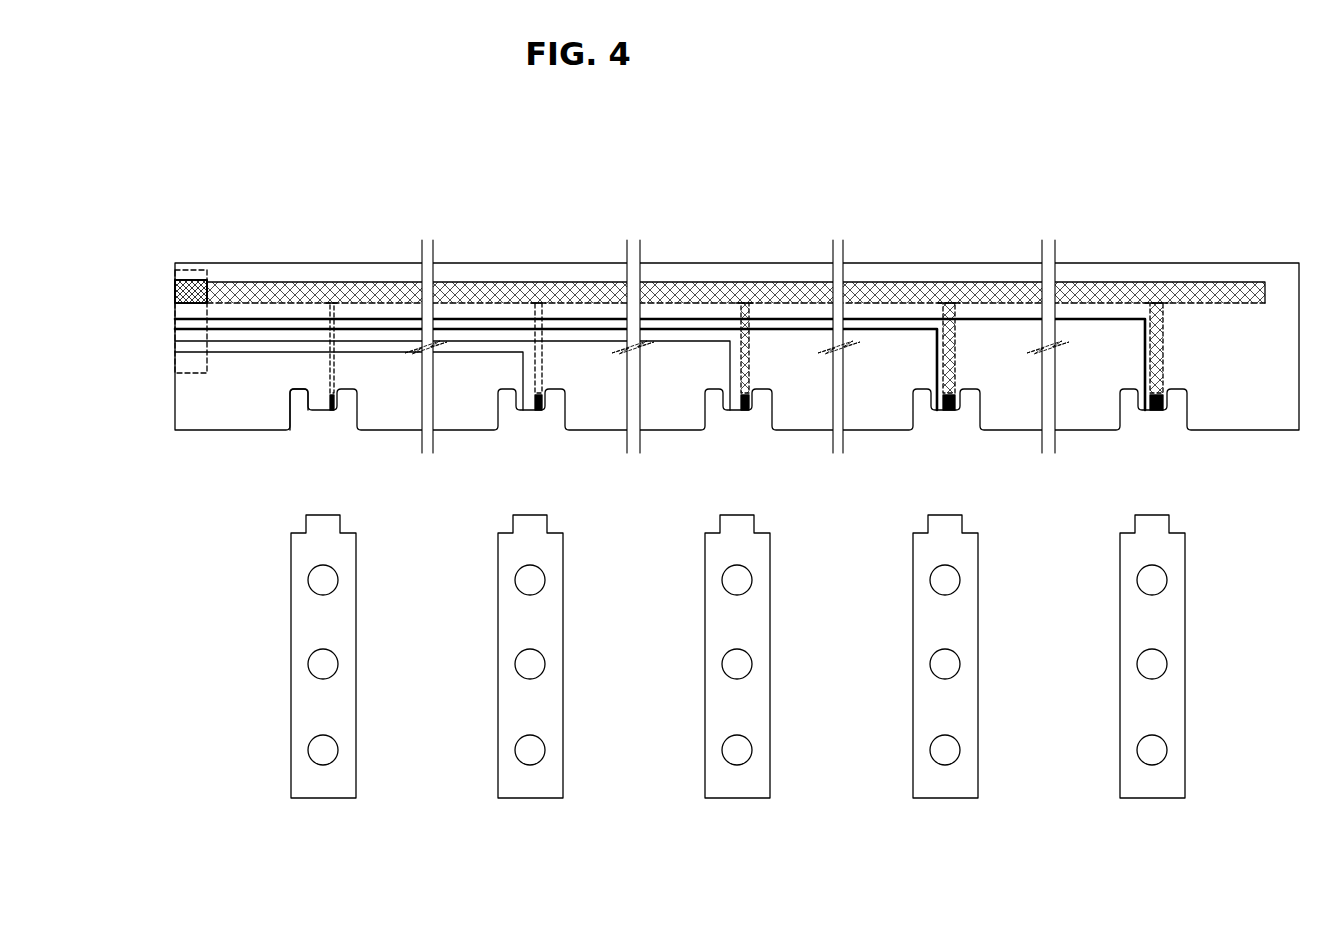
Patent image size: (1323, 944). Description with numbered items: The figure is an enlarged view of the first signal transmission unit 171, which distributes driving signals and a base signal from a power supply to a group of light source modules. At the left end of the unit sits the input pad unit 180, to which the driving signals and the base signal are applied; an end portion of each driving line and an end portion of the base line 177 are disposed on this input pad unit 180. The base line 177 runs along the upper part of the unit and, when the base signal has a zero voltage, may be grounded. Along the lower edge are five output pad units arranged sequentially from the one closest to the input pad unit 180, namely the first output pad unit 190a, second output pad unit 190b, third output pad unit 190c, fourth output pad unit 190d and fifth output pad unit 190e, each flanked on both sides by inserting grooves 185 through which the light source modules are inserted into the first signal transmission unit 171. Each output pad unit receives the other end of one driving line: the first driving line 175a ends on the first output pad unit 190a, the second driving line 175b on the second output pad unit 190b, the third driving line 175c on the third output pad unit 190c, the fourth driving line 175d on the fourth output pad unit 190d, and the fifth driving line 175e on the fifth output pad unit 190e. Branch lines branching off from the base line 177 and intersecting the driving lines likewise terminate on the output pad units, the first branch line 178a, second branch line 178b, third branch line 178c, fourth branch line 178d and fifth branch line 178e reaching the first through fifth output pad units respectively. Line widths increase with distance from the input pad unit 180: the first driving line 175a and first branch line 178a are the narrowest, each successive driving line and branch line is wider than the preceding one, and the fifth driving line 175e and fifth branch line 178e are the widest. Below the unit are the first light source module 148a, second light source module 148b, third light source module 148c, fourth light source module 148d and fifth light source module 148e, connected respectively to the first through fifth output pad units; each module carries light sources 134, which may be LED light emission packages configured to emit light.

The light source 134 is at (320, 579).
The first light source module 148a is at (322, 798).
The second light source module 148b is at (529, 798).
The third light source module 148c is at (736, 798).
The fourth light source module 148d is at (944, 798).
The fifth light source module 148e is at (1151, 798).
The first signal transmission unit 171 is at (690, 263).
The first driving line 175a is at (183, 363).
The second driving line 175b is at (183, 352).
The third driving line 175c is at (183, 341).
The fourth driving line 175d is at (183, 329).
The fifth driving line 175e is at (183, 319).
The base line 177 is at (187, 293).
The first branch line 178a is at (332, 375).
The second branch line 178b is at (540, 375).
The third branch line 178c is at (747, 373).
The fourth branch line 178d is at (957, 373).
The fifth branch line 178e is at (1160, 373).
The input pad unit 180 is at (190, 373).
The inserting groove 185 is at (300, 402).
The first output pad unit 190a is at (323, 413).
The second output pad unit 190b is at (533, 412).
The third output pad unit 190c is at (733, 412).
The fourth output pad unit 190d is at (940, 412).
The fifth output pad unit 190e is at (1150, 412).